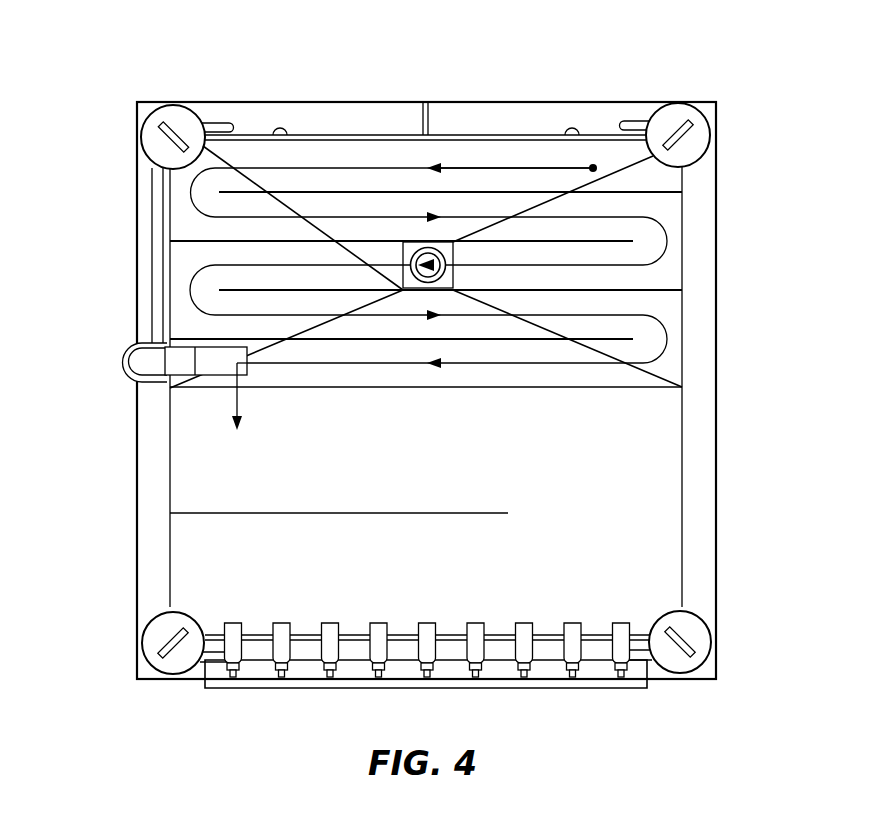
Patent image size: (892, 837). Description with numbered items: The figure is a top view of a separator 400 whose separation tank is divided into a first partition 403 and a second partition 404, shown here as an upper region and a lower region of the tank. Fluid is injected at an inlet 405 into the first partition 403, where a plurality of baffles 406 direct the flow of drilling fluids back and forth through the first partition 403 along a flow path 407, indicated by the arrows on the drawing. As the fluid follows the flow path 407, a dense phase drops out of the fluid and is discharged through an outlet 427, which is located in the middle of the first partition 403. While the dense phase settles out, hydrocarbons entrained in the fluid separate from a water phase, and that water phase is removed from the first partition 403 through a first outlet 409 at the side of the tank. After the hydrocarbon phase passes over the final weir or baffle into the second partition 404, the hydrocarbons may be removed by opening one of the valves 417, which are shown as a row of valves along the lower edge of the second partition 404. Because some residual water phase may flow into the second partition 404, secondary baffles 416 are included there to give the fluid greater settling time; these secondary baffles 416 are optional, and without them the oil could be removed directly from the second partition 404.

The separator 400 is at (518, 52).
The first partition 403 is at (735, 133).
The second partition 404 is at (735, 393).
The inlet 405 is at (318, 102).
The baffles 406 is at (233, 285).
The flow path 407 is at (533, 167).
The first outlet 409 is at (215, 380).
The secondary baffles 416 is at (215, 513).
The valves 417 is at (487, 658).
The outlet 427 is at (410, 268).